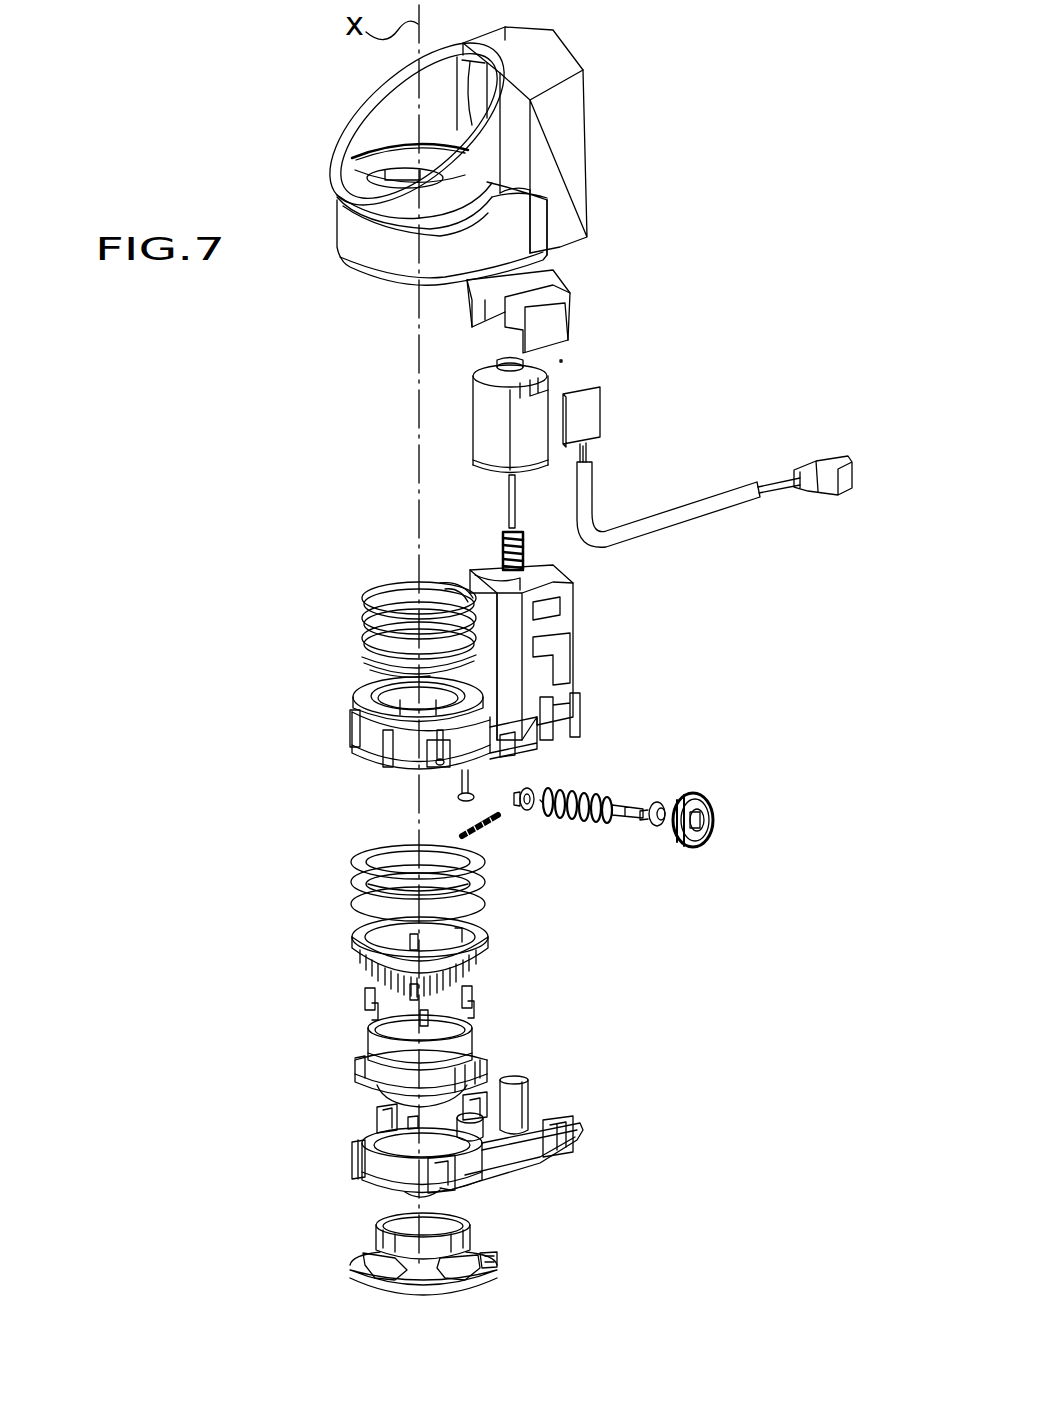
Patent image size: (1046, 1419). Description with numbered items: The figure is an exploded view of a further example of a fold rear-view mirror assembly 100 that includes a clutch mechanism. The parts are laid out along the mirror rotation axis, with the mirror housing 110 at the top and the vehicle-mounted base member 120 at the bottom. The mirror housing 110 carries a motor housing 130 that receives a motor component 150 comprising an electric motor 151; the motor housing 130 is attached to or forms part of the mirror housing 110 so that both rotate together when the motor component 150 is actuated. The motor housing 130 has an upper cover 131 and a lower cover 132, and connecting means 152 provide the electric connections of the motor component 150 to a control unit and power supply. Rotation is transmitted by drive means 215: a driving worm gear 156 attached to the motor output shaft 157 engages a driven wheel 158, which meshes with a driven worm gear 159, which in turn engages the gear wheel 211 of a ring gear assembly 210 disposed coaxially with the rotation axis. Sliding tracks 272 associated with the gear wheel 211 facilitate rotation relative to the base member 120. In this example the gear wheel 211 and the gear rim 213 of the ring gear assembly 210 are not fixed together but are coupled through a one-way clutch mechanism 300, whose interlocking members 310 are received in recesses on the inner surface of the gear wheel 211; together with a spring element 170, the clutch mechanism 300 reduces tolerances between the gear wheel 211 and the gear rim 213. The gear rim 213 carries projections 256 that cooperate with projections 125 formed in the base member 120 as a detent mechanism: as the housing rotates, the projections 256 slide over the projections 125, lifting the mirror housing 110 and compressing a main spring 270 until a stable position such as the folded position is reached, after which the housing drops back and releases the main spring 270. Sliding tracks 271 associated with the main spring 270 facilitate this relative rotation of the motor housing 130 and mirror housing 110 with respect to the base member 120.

The rear-view mirror assembly 100 is at (277, 497).
The mirror housing 110 is at (566, 150).
The upper cover 131 is at (568, 297).
The motor component 150 is at (570, 377).
The electric motor 151 is at (480, 423).
The connecting means 152 is at (598, 417).
The motor output shaft 157 is at (512, 498).
The driving worm gear 156 is at (503, 548).
The motor housing 130 is at (563, 663).
The main spring 270 is at (372, 612).
The sliding tracks 271 is at (355, 704).
The driven worm gear 159 is at (578, 793).
The driven wheel 158 is at (695, 797).
The spring element 170 is at (485, 822).
The drive means 215 is at (625, 858).
The sliding tracks 272 is at (357, 880).
The gear wheel 211 is at (353, 942).
The ring gear assembly 210 is at (488, 927).
The interlocking members 310 is at (372, 1012).
The one-way clutch mechanism 300 is at (483, 1010).
The gear rim 213 is at (353, 1072).
The projections 256 is at (392, 1093).
The lower cover 132 is at (580, 1152).
The base member 120 is at (350, 1267).
The projections 125 is at (487, 1277).